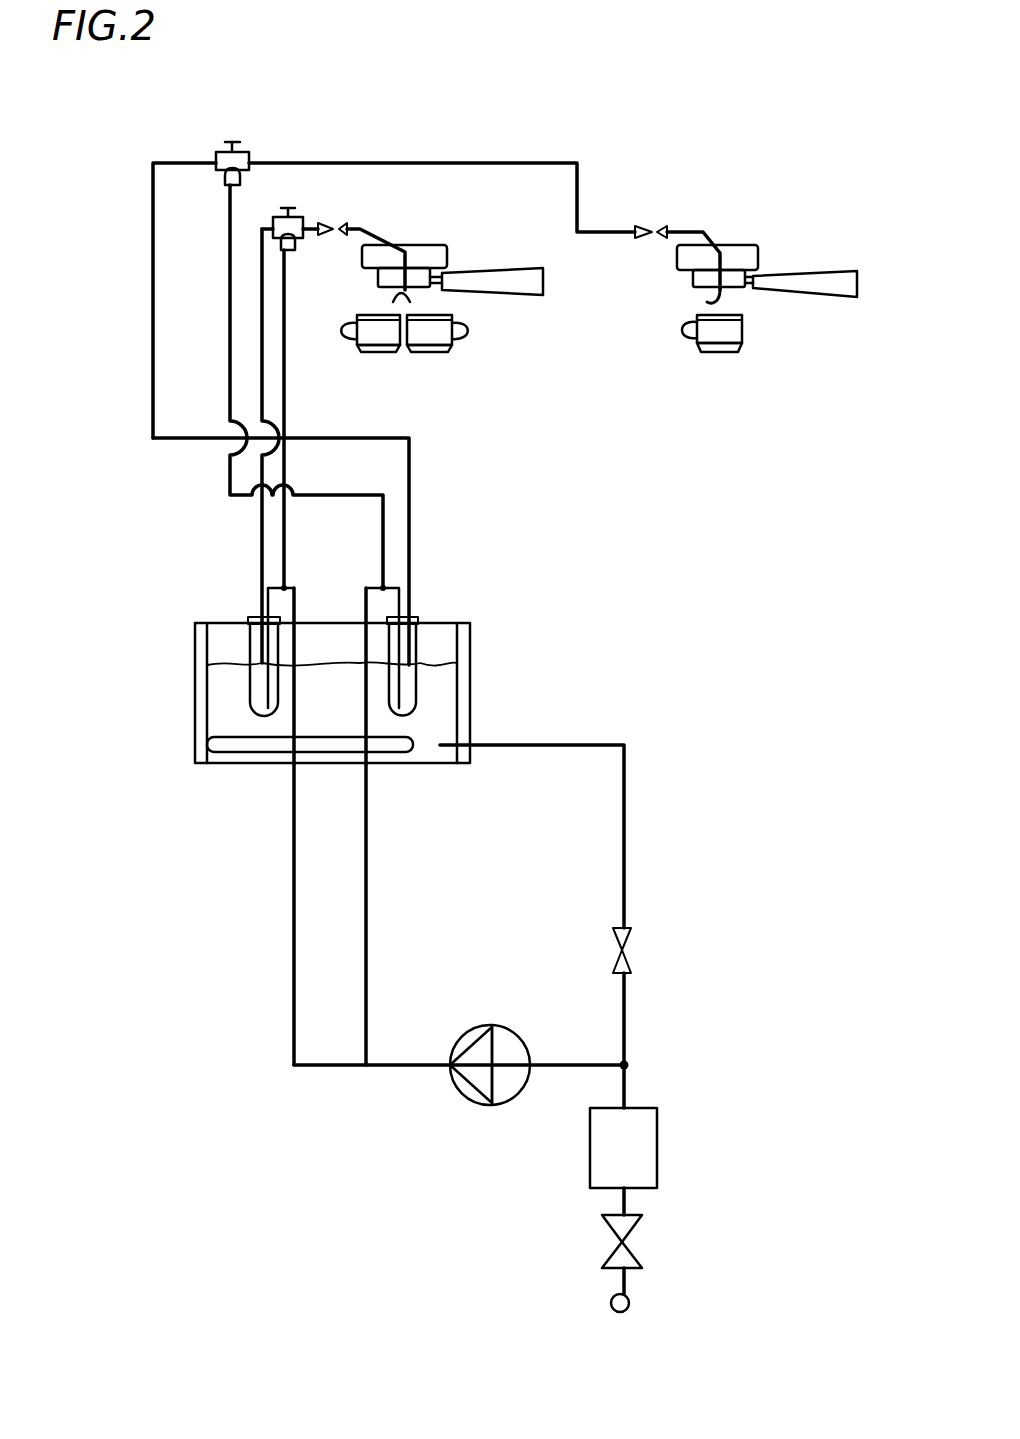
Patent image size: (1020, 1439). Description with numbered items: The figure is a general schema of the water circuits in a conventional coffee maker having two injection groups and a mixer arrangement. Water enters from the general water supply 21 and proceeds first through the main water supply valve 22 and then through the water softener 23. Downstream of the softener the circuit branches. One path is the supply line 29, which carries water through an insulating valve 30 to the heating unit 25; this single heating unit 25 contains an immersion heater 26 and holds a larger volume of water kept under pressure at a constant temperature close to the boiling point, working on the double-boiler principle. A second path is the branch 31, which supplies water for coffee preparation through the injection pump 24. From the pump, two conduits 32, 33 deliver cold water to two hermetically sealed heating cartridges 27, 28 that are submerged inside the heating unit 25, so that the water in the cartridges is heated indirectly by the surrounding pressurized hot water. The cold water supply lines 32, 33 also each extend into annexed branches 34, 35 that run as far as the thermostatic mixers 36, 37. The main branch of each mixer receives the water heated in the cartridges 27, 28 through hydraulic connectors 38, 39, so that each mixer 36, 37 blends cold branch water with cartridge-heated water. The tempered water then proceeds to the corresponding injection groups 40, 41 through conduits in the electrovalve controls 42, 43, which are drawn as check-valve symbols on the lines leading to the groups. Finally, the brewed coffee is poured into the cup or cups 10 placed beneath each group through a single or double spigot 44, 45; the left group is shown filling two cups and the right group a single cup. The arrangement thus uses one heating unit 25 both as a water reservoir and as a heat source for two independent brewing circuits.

The cup 10 is at (432, 358).
The general water supply 21 is at (705, 1210).
The main water supply valve 22 is at (640, 1242).
The water softener 23 is at (627, 1150).
The injection pump 24 is at (462, 1018).
The heating unit 25 is at (472, 720).
The heater 26 is at (417, 743).
The heating cartridge 27 is at (407, 683).
The heating cartridge 28 is at (262, 681).
The supply line 29 is at (625, 1003).
The insulating valve 30 is at (627, 940).
The branch 31 is at (563, 1068).
The cold water supply line 32 is at (366, 840).
The cold water supply line 33 is at (290, 870).
The annexed branch 34 is at (230, 330).
The annexed branch 35 is at (287, 392).
The thermostatic mixer 36 is at (222, 152).
The thermostatic mixer 37 is at (306, 216).
The hydraulic connector 38 is at (412, 512).
The hydraulic connector 39 is at (261, 528).
The injection group 40 is at (753, 305).
The injection group 41 is at (493, 312).
The electrovalve control 42 is at (658, 230).
The electrovalve control 43 is at (342, 225).
The spigot 44 is at (697, 302).
The spigot 45 is at (383, 297).